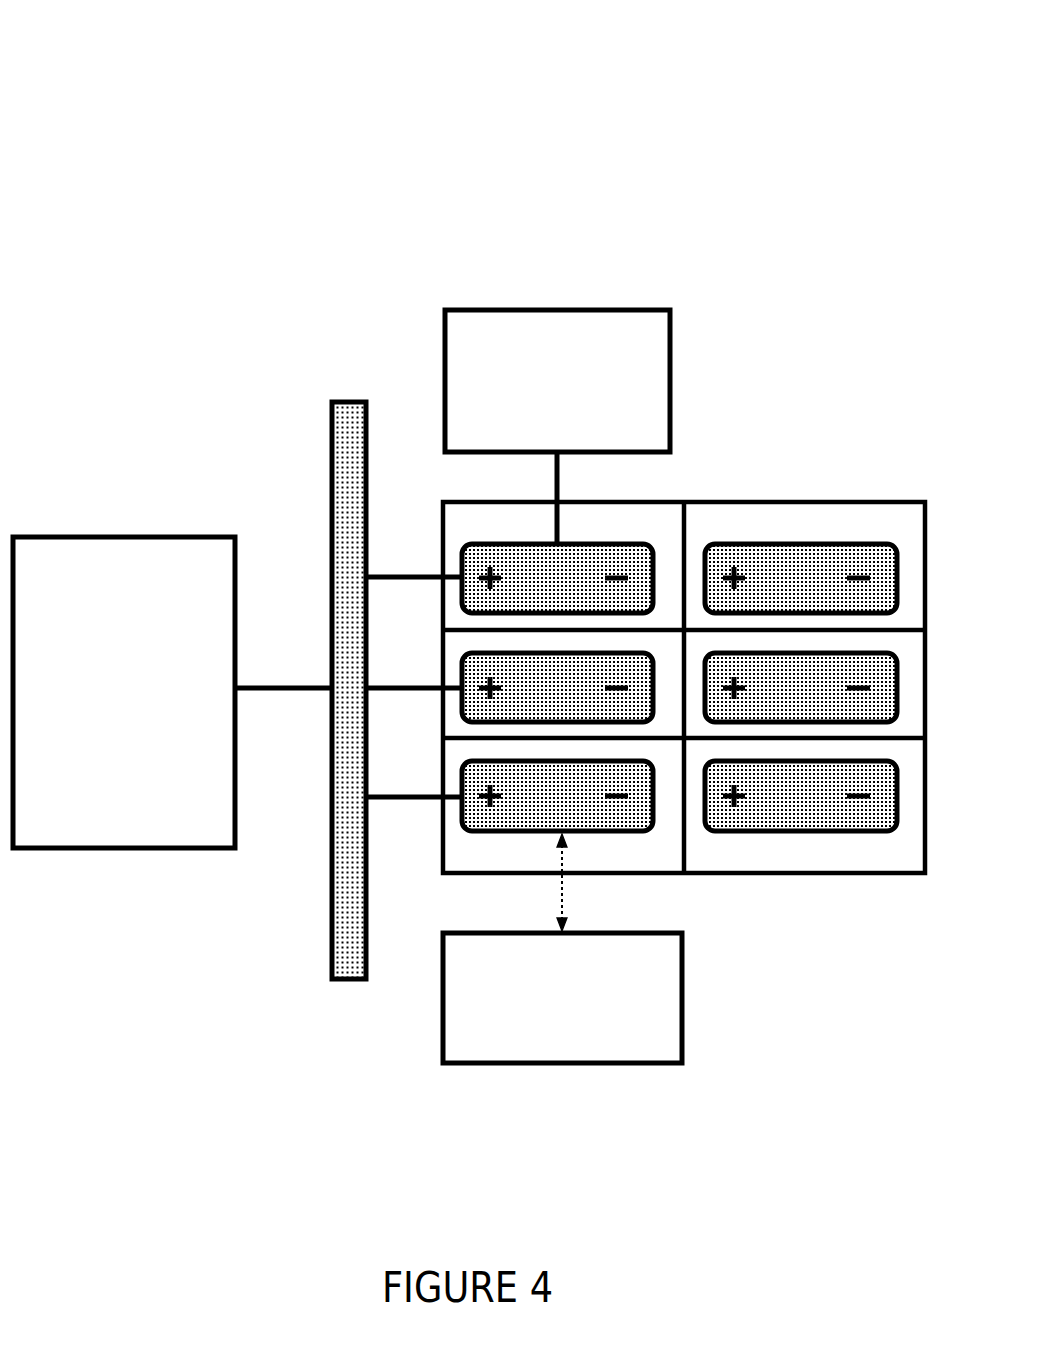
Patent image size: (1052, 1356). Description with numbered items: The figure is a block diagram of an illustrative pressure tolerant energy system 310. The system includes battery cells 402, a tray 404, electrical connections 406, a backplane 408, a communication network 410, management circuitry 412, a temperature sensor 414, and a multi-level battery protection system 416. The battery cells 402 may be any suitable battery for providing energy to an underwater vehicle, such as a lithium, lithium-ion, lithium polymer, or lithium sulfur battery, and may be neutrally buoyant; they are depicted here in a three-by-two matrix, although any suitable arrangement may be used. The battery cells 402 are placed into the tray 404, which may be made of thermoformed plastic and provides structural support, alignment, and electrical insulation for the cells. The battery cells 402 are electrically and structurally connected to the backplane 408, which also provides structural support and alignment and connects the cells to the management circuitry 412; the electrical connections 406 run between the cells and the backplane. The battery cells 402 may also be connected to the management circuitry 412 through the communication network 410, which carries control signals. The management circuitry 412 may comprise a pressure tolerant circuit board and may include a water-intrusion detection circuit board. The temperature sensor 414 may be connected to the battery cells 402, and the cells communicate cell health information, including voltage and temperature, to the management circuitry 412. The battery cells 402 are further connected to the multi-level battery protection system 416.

The pressure tolerant energy system 310 is at (126, 54).
The battery cells 402 is at (802, 564).
The tray 404 is at (684, 643).
The electrical connections 406 is at (411, 817).
The backplane 408 is at (318, 996).
The communication network 410 is at (280, 663).
The management circuitry 412 is at (105, 590).
The temperature sensor 414 is at (560, 281).
The multi-level battery protection system 416 is at (562, 1078).